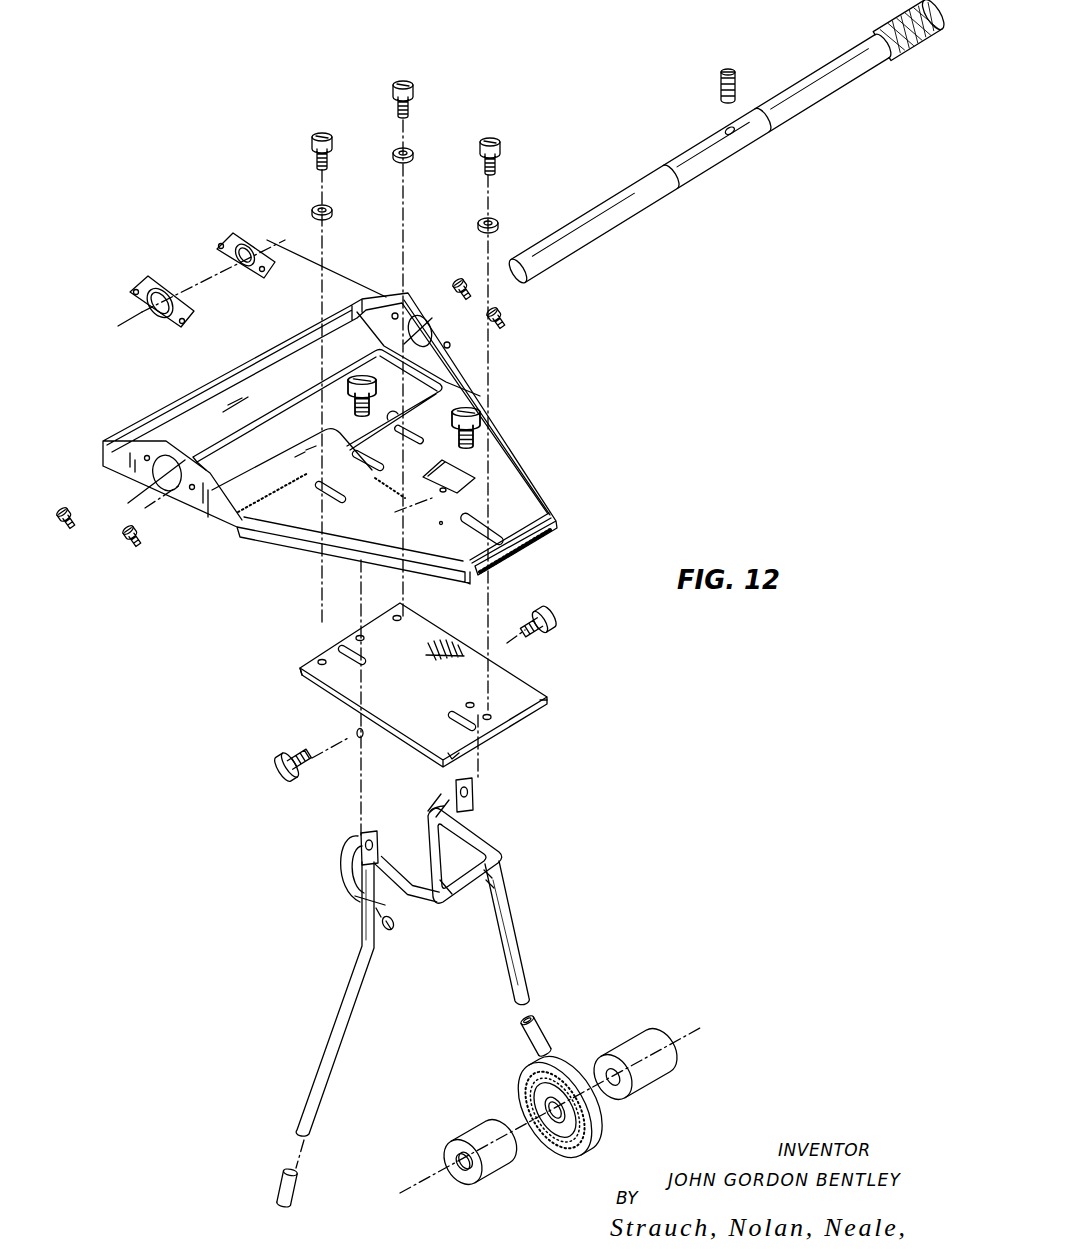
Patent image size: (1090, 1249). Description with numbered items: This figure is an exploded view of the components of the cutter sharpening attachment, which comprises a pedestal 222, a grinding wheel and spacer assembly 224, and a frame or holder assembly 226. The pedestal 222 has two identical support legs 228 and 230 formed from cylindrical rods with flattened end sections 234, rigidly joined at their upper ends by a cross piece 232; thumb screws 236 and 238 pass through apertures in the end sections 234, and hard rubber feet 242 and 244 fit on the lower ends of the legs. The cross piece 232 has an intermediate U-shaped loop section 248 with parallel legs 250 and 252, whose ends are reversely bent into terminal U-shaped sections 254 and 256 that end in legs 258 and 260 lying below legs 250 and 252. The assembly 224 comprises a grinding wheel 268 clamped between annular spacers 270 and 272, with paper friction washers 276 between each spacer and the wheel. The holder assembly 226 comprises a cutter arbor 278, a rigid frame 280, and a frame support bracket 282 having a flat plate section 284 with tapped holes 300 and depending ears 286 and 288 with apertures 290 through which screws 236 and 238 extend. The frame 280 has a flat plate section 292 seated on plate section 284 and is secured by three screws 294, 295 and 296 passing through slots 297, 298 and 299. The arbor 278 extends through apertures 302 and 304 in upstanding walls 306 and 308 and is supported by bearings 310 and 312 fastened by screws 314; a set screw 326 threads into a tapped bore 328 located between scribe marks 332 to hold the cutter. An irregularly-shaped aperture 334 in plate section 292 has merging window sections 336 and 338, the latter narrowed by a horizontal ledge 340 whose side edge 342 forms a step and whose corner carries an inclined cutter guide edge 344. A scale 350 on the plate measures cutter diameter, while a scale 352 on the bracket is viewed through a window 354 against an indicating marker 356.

The pedestal 222 is at (531, 917).
The grinding wheel and spacer assembly 224 is at (522, 1190).
The frame or holder assembly 226 is at (562, 483).
The support leg 228 is at (333, 1064).
The support leg 230 is at (513, 963).
The cross piece 232 is at (492, 884).
The flattened end sections 234 is at (374, 834).
The thumb screw 236 is at (285, 780).
The thumb screw 238 is at (553, 616).
The foot 242 is at (300, 1190).
The foot 244 is at (545, 1027).
The U-shaped loop section 248 is at (490, 876).
The leg of loop section 250 is at (355, 902).
The leg of loop section 252 is at (500, 830).
The terminal U-shaped section 254 is at (340, 882).
The terminal U-shaped section 256 is at (430, 815).
The leg 258 is at (392, 930).
The leg 260 is at (449, 899).
The grinding wheel 268 is at (596, 1137).
The annular spacer 270 is at (466, 1138).
The annular spacer 272 is at (646, 1042).
The paper friction washers 276 is at (560, 1140).
The cutter arbor 278 is at (615, 232).
The rigid frame 280 is at (516, 420).
The frame support bracket 282 is at (538, 681).
The plate section 284 is at (381, 686).
The depending ear 286 is at (323, 694).
The depending ear 288 is at (552, 702).
The aperture 290 is at (359, 740).
The flat plate section 292 is at (351, 523).
The screw 294 is at (498, 144).
The screw 295 is at (320, 135).
The screw 296 is at (410, 85).
The slot 297 is at (540, 527).
The slot 298 is at (326, 492).
The slot 299 is at (411, 442).
The tapped holes 300 is at (401, 616).
The aperture 302 is at (147, 481).
The aperture 304 is at (447, 352).
The upstanding wall 306 is at (412, 295).
The upstanding wall 308 is at (209, 463).
The bearing 310 is at (242, 243).
The bearing 312 is at (141, 286).
The screws 314 is at (490, 306).
The set screw 326 is at (738, 79).
The tapped bore 328 is at (742, 138).
The scribe marks 332 is at (667, 172).
The irregularly-shaped aperture 334 is at (352, 372).
The window section 336 is at (406, 432).
The window section 338 is at (276, 448).
The horizontal ledge 340 is at (280, 488).
The side edge 342 is at (366, 456).
The cutter guide edge 344 is at (313, 388).
The scale 350 is at (439, 524).
The scale 352 is at (427, 645).
The window 354 is at (450, 467).
The indicating marker 356 is at (462, 521).